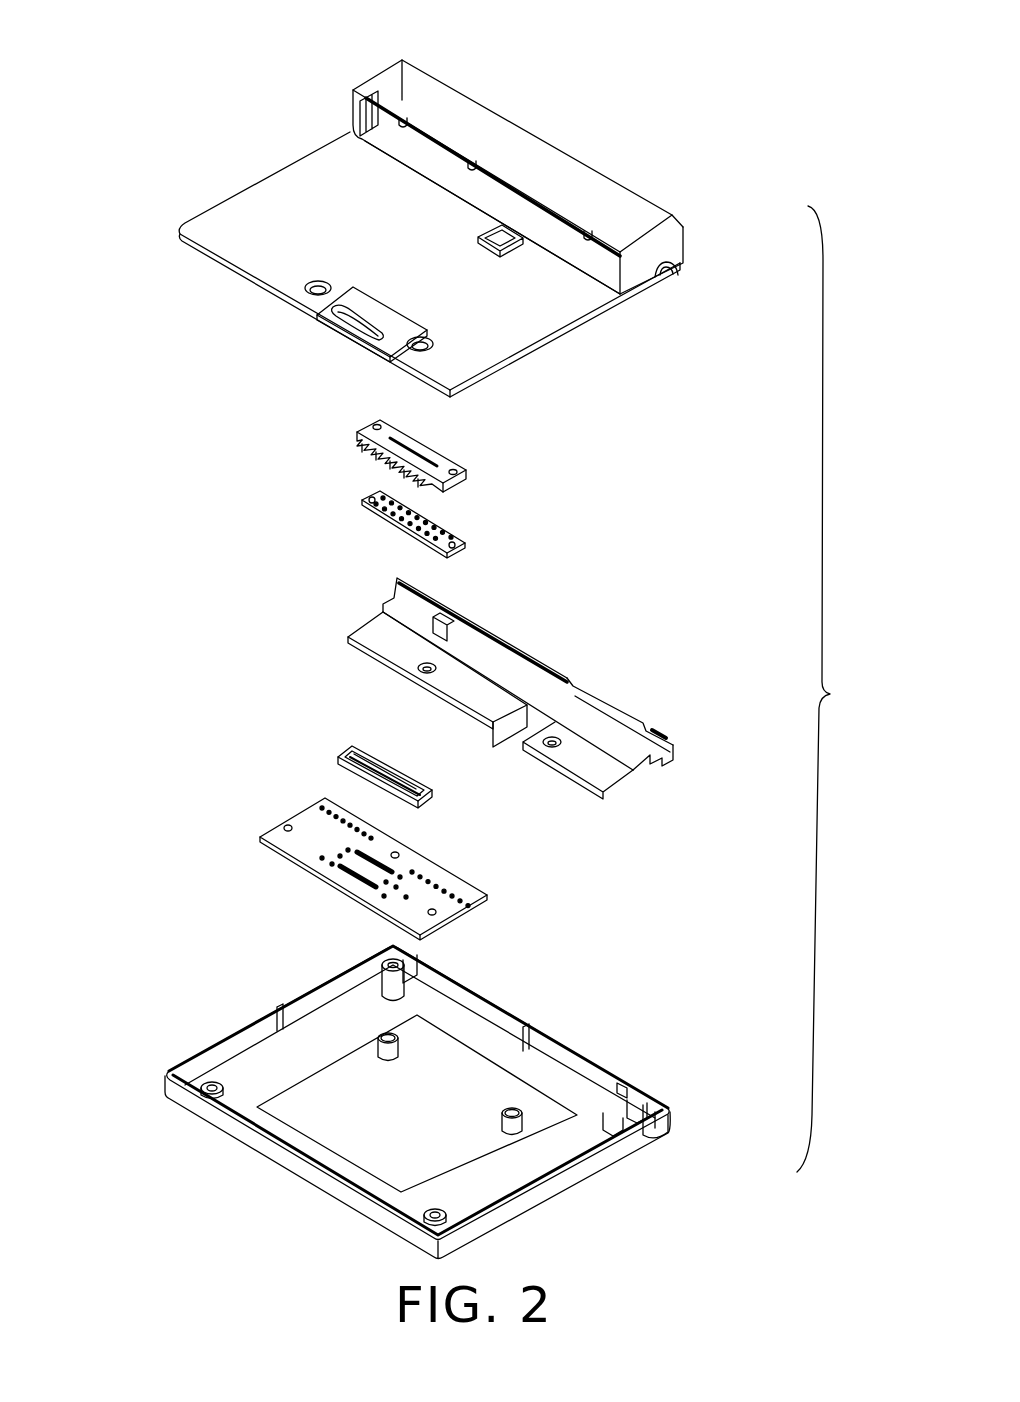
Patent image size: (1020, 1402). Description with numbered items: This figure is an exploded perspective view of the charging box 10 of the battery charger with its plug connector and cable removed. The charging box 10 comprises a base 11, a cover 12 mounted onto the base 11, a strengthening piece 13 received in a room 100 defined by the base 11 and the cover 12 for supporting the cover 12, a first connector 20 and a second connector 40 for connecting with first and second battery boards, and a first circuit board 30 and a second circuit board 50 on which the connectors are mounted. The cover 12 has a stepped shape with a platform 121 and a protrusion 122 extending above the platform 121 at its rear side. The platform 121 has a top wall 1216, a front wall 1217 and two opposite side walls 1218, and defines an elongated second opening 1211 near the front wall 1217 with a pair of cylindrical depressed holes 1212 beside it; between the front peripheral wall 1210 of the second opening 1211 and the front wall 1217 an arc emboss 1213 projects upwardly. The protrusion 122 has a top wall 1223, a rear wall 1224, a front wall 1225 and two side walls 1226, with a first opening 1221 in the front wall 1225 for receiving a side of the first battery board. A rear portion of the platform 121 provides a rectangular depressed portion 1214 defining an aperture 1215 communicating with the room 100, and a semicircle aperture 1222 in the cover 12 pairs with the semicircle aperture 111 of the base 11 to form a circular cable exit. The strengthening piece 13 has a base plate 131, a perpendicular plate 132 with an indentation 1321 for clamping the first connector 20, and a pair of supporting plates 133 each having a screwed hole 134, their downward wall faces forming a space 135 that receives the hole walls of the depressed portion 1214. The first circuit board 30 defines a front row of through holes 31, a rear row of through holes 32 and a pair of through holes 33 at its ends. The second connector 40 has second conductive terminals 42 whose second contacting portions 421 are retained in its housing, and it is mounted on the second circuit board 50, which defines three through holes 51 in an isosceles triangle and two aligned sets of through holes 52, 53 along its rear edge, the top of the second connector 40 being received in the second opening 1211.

The charging box 10 is at (835, 689).
The base 11 is at (193, 1043).
The cover 12 is at (233, 173).
The strengthening piece 13 is at (353, 612).
The first connector 20 is at (445, 450).
The first circuit board 30 is at (457, 525).
The front row of through holes 31 is at (407, 530).
The rear row of through holes 32 is at (420, 513).
The through holes 33 is at (365, 506).
The second connector 40 is at (337, 742).
The second conductive terminals 42 is at (370, 773).
The second contacting portion 421 is at (400, 790).
The second circuit board 50 is at (263, 823).
The through holes 51 is at (428, 912).
The through holes 52 is at (457, 880).
The through holes 53 is at (357, 825).
The room 100 is at (443, 1130).
The semicircle aperture 111 is at (643, 1132).
The platform 121 is at (232, 227).
The protrusion 122 is at (492, 133).
The front peripheral wall 1210 is at (400, 320).
The second opening 1211 is at (333, 300).
The cylindrical depressed holes 1212 is at (410, 353).
The arc emboss 1213 is at (347, 333).
The rectangular depressed portion 1214 is at (480, 237).
The aperture 1215 is at (517, 237).
The top wall 1216 is at (520, 300).
The front wall 1217 is at (253, 280).
The side walls 1218 is at (430, 322).
The first opening 1221 is at (427, 152).
The semicircle aperture 1222 is at (660, 277).
The top wall 1223 is at (447, 105).
The rear wall 1224 is at (647, 200).
The front wall 1225 is at (353, 112).
The side walls 1226 is at (670, 248).
The base plate 131 is at (640, 757).
The perpendicular plate 132 is at (497, 650).
The indentation 1321 is at (617, 710).
The supporting plates 133 is at (593, 767).
The screwed hole 134 is at (550, 747).
The space 135 is at (523, 747).